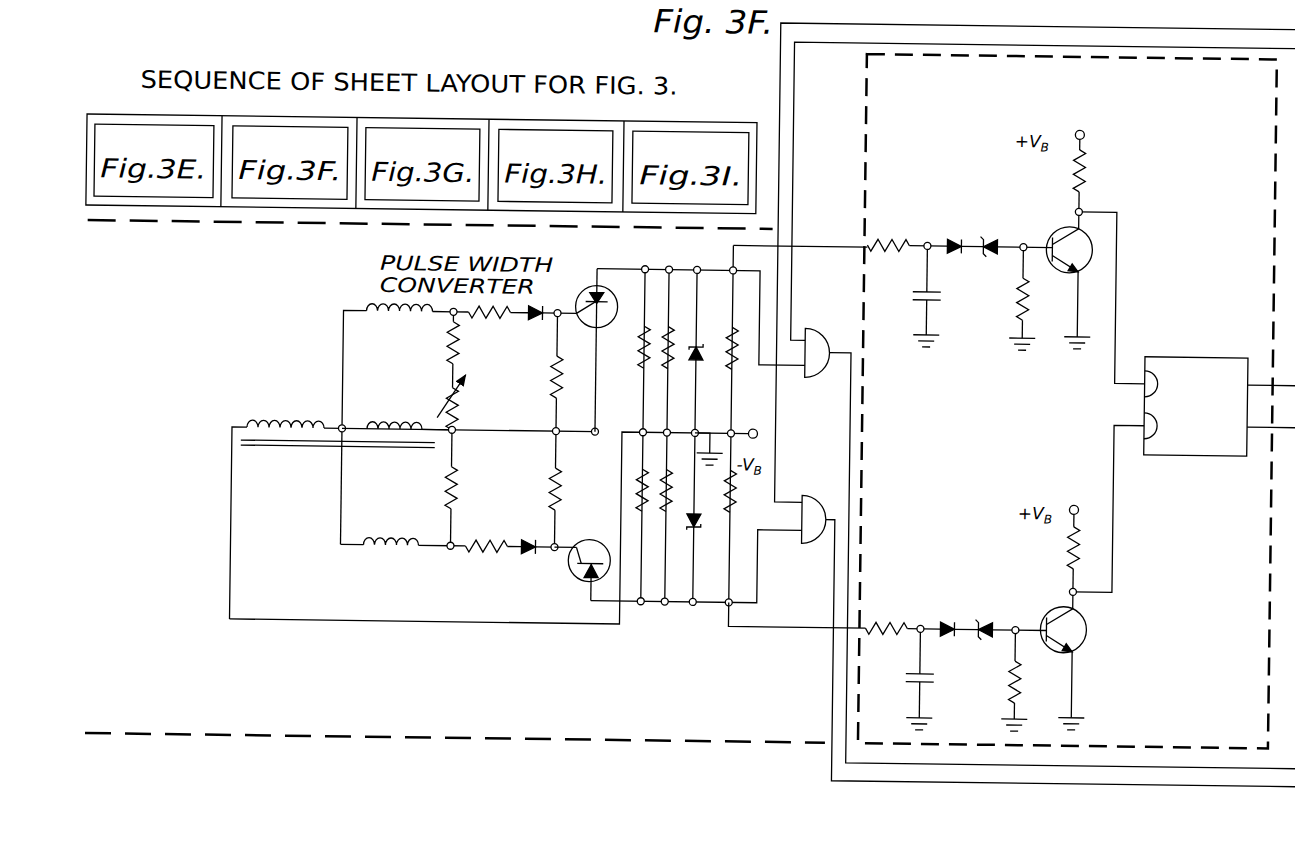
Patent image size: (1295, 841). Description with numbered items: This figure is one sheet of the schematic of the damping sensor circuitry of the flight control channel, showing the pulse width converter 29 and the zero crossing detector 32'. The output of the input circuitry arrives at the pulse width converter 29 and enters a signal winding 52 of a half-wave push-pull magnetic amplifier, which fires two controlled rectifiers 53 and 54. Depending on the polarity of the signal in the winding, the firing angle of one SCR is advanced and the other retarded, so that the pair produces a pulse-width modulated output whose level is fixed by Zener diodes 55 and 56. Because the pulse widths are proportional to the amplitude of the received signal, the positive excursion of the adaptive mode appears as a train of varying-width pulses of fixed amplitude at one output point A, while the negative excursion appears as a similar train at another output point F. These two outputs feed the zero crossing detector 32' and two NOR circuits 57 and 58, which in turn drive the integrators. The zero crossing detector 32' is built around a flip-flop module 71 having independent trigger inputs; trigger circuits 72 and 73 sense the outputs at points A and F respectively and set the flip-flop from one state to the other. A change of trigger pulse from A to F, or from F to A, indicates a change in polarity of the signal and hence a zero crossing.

The pulse width converter 29 is at (270, 230).
The zero crossing detector 32' is at (1039, 400).
The signal winding 52 is at (263, 417).
The controlled rectifier 53 is at (581, 287).
The controlled rectifier 54 is at (570, 573).
The Zener diode 55 is at (699, 345).
The Zener diode 56 is at (700, 532).
The NOR circuit 57 is at (845, 328).
The NOR circuit 58 is at (837, 487).
The flip-flop module 71 is at (1190, 350).
The trigger circuit 72 is at (1114, 188).
The trigger circuit 73 is at (1119, 597).